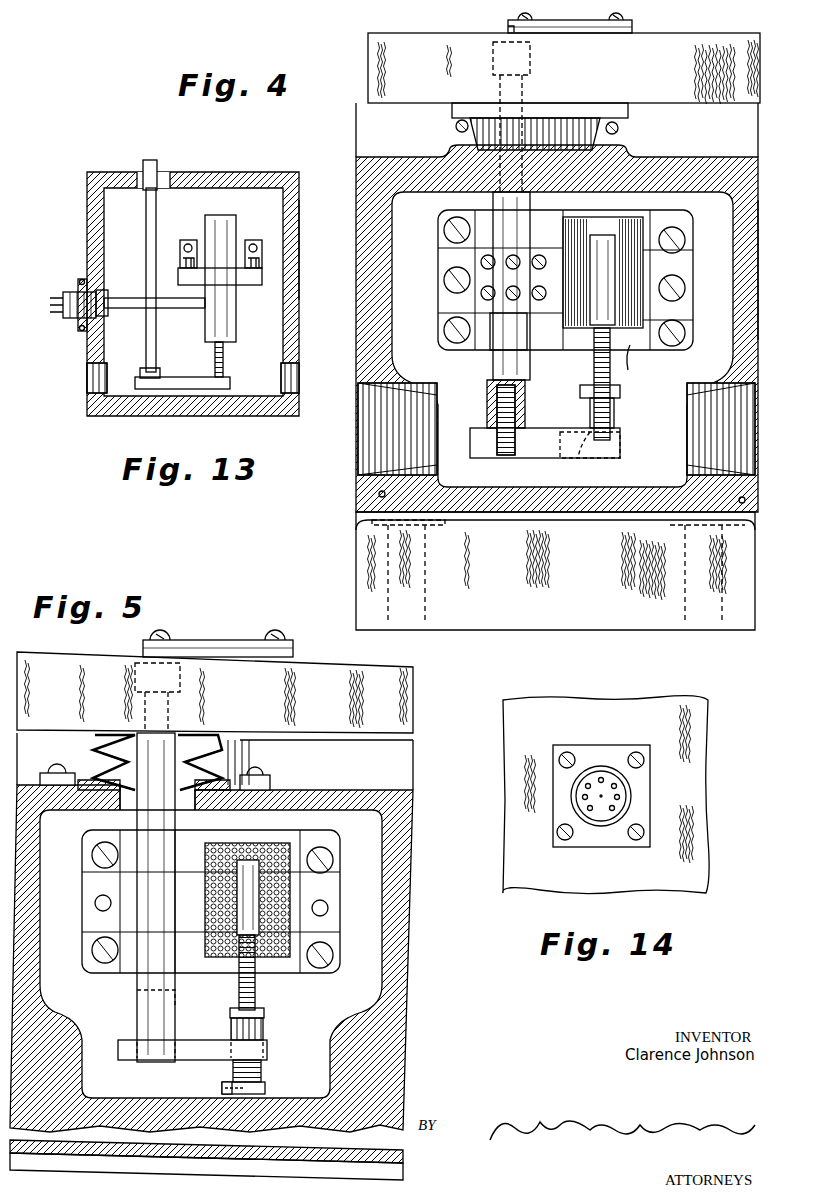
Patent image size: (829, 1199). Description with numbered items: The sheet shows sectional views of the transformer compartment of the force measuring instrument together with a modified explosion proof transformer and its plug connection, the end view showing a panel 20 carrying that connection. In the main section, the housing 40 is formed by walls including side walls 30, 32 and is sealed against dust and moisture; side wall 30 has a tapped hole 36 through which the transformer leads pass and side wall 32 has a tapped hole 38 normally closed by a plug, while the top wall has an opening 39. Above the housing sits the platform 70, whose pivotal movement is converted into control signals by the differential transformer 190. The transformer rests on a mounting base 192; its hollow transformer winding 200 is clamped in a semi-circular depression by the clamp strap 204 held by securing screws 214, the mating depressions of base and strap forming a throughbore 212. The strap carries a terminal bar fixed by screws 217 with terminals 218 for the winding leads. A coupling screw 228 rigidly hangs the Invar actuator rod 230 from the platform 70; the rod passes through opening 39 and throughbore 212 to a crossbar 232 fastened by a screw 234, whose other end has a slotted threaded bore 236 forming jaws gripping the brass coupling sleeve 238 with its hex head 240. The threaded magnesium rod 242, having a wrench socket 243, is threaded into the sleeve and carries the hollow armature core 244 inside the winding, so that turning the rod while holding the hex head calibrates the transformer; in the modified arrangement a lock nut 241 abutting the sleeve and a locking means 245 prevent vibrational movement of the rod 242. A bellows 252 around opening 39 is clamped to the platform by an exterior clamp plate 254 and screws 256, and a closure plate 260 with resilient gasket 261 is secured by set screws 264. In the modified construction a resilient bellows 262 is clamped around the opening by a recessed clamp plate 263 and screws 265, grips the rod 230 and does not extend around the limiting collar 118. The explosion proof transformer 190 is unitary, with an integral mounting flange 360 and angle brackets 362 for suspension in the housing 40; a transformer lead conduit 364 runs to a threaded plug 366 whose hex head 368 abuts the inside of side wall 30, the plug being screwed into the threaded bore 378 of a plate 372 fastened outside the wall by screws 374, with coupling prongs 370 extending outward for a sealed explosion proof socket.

In FIG. 14, the panel 20 is at (578, 712).
In FIG. 13, the side wall 30 is at (92, 205).
In FIG. 4, the side wall 30 is at (356, 345).
In FIG. 13, the side wall 32 is at (299, 220).
In FIG. 4, the side wall 32 is at (758, 355).
In FIG. 13, the tapped hole 36 is at (108, 272).
In FIG. 4, the tapped hole 36 is at (358, 390).
In FIG. 4, the tapped hole 38 is at (755, 405).
In FIG. 13, the opening 39 is at (143, 170).
In FIG. 4, the opening 39 is at (495, 165).
In FIG. 5, the opening 39 is at (118, 800).
In FIG. 5, the housing 40 is at (115, 1030).
In FIG. 4, the platform 70 is at (366, 95).
In FIG. 5, the platform 70 is at (413, 730).
In FIG. 5, the limiting collar 118 is at (250, 748).
In FIG. 13, the differential transformer 190 is at (203, 215).
In FIG. 4, the mounting base 192 is at (643, 359).
In FIG. 13, the transformer winding 200 is at (236, 318).
In FIG. 4, the transformer winding 200 is at (630, 218).
In FIG. 4, the clamp strap 204 is at (450, 250).
In FIG. 5, the throughbore 212 is at (95, 900).
In FIG. 4, the securing screws 214 is at (697, 298).
In FIG. 4, the screws 217 is at (484, 292).
In FIG. 4, the terminals 218 is at (515, 300).
In FIG. 4, the coupling screw 228 is at (530, 60).
In FIG. 5, the coupling screw 228 is at (157, 696).
In FIG. 13, the actuator rod 230 is at (147, 262).
In FIG. 4, the actuator rod 230 is at (493, 365).
In FIG. 5, the actuator rod 230 is at (175, 822).
In FIG. 13, the crossbar 232 is at (175, 377).
In FIG. 4, the crossbar 232 is at (545, 428).
In FIG. 5, the crossbar 232 is at (198, 1040).
In FIG. 4, the screw 234 is at (500, 455).
In FIG. 5, the screw 234 is at (138, 1062).
In FIG. 4, the threaded bore 236 is at (575, 462).
In FIG. 4, the coupling sleeve 238 is at (614, 415).
In FIG. 5, the coupling sleeve 238 is at (263, 1025).
In FIG. 4, the hex head 240 is at (620, 392).
In FIG. 5, the hex head 240 is at (265, 1088).
In FIG. 5, the lock nut 241 is at (264, 1012).
In FIG. 13, the threaded magnesium rod 242 is at (223, 362).
In FIG. 4, the threaded magnesium rod 242 is at (594, 362).
In FIG. 5, the threaded magnesium rod 242 is at (255, 984).
In FIG. 4, the wrench socket 243 is at (620, 450).
In FIG. 5, the wrench socket 243 is at (222, 1088).
In FIG. 4, the armature core 244 is at (600, 236).
In FIG. 5, the armature core 244 is at (255, 843).
In FIG. 5, the locking means 245 is at (236, 960).
In FIG. 4, the bellows 252 is at (600, 140).
In FIG. 4, the exterior clamp plate 254 is at (465, 108).
In FIG. 4, the screws 256 is at (456, 126).
In FIG. 4, the closure plate 260 is at (548, 20).
In FIG. 5, the closure plate 260 is at (215, 632).
In FIG. 4, the resilient gasket 261 is at (508, 29).
In FIG. 5, the bellows 262 is at (105, 735).
In FIG. 5, the recessed clamp plate 263 is at (55, 778).
In FIG. 4, the set screws 264 is at (518, 19).
In FIG. 5, the set screws 264 is at (250, 772).
In FIG. 5, the screws 265 is at (57, 768).
In FIG. 13, the mounting flange 360 is at (262, 282).
In FIG. 13, the angle brackets 362 is at (253, 242).
In FIG. 13, the transformer lead conduit 364 is at (130, 298).
In FIG. 13, the threaded plug 366 is at (65, 318).
In FIG. 14, the threaded plug 366 is at (592, 816).
In FIG. 13, the hex head 368 is at (106, 320).
In FIG. 13, the coupling prongs 370 is at (60, 296).
In FIG. 14, the coupling prongs 370 is at (617, 786).
In FIG. 13, the plate 372 is at (80, 279).
In FIG. 14, the plate 372 is at (603, 735).
In FIG. 13, the screws 374 is at (82, 331).
In FIG. 14, the screws 374 is at (562, 754).
In FIG. 13, the threaded bore 378 is at (80, 282).